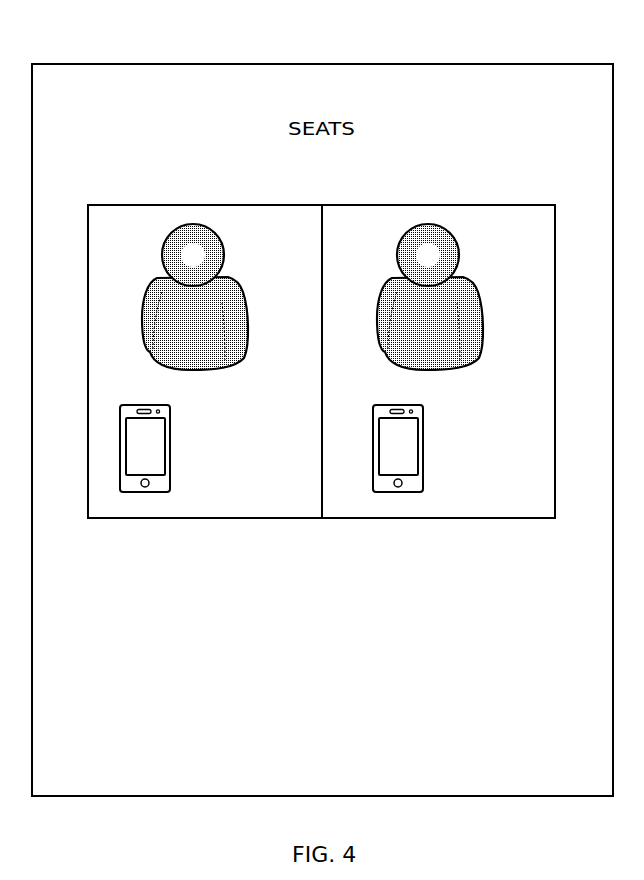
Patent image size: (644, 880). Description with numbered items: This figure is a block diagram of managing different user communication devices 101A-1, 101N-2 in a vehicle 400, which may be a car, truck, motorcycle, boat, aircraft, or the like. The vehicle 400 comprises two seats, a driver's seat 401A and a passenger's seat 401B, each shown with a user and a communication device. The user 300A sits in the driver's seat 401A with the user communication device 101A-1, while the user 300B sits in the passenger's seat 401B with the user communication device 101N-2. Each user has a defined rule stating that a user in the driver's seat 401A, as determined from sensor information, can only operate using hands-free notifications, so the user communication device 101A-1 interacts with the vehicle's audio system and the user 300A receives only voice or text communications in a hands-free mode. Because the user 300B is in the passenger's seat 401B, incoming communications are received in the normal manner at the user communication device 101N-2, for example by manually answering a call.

The vehicle 400 is at (222, 64).
The driver's seat 401A is at (124, 205).
The passenger's seat 401B is at (369, 205).
The user 300A is at (228, 282).
The user 300B is at (463, 282).
The user communication device 101A-1 is at (170, 448).
The user communication device 101N-2 is at (422, 448).